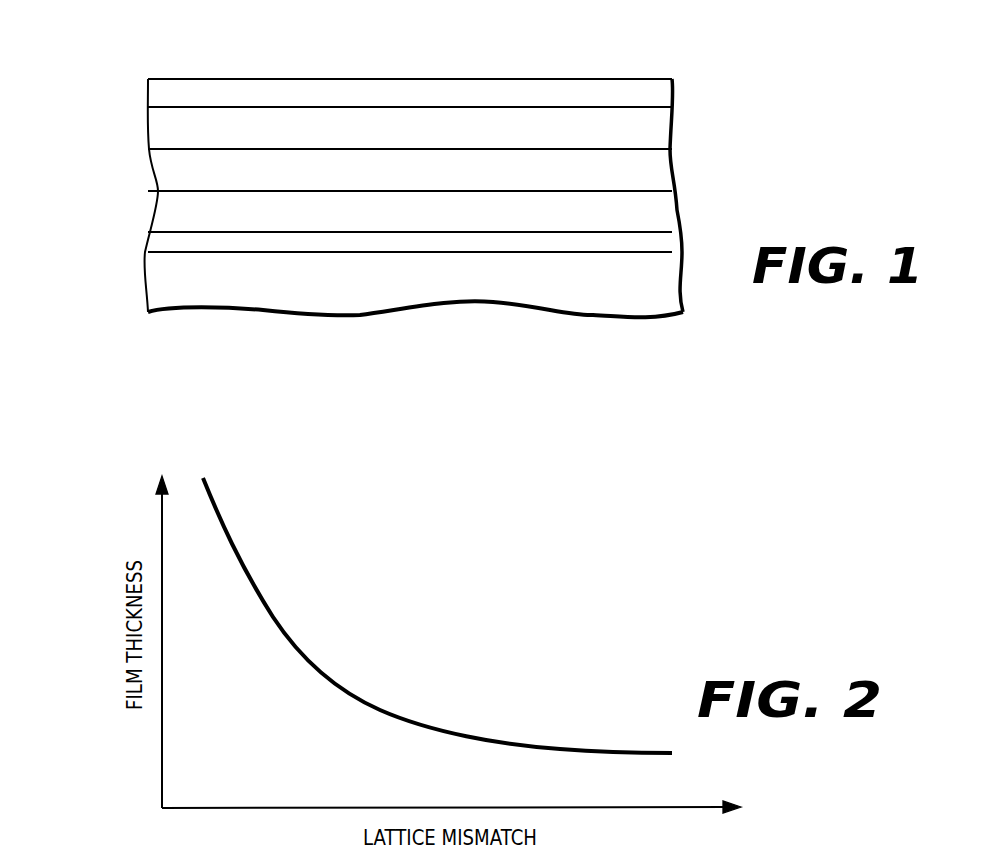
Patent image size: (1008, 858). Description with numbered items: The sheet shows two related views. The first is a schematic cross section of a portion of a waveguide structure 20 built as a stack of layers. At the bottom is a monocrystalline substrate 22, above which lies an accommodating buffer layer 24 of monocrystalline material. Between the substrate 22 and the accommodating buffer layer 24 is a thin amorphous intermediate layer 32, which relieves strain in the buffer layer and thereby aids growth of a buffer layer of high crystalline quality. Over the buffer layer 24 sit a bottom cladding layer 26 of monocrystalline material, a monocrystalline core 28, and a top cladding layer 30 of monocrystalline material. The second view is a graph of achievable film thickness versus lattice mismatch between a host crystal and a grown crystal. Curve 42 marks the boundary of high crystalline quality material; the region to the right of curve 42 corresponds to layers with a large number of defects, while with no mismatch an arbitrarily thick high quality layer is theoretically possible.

In FIG. 1, the waveguide structure 20 is at (125, 80).
In FIG. 1, the monocrystalline substrate 22 is at (160, 282).
In FIG. 1, the accommodating buffer layer 24 is at (165, 212).
In FIG. 1, the bottom cladding layer 26 is at (658, 170).
In FIG. 1, the core 28 is at (160, 132).
In FIG. 1, the top cladding layer 30 is at (658, 95).
In FIG. 1, the amorphous intermediate layer 32 is at (668, 243).
In FIG. 2, the curve 42 is at (272, 618).